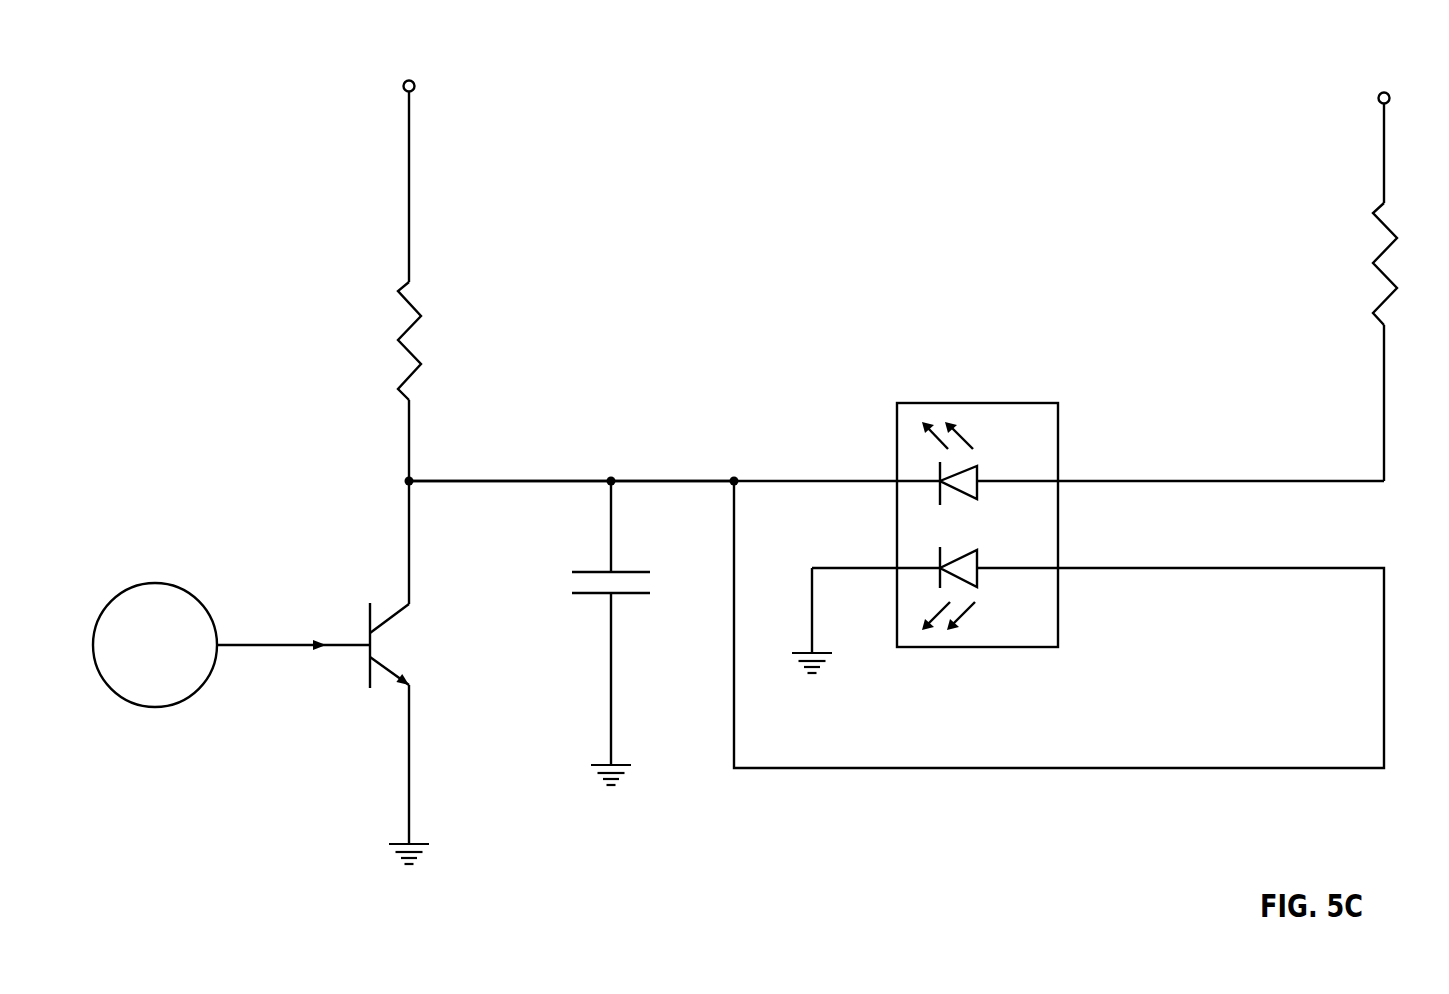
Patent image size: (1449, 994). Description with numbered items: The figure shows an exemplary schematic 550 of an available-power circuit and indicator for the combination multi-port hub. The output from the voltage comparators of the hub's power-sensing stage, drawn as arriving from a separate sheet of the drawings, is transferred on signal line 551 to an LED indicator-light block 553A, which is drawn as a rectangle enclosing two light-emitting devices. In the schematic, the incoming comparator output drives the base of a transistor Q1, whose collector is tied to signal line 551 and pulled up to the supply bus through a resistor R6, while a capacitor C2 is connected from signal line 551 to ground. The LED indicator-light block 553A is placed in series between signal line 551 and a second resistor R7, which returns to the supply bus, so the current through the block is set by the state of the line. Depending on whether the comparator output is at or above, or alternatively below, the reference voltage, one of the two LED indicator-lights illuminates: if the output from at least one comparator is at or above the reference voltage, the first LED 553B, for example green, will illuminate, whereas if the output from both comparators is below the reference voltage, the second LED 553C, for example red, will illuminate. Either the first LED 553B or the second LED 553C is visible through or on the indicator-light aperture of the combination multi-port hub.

The schematic 550 is at (243, 98).
The signal line 551 is at (543, 481).
The LED indicator-light block 553A is at (984, 403).
The first LED 553B is at (977, 475).
The second LED 553C is at (977, 572).
The resistor R6 is at (433, 341).
The resistor R7 is at (1406, 264).
The capacitor C2 is at (591, 633).
The transistor Q1 is at (364, 645).